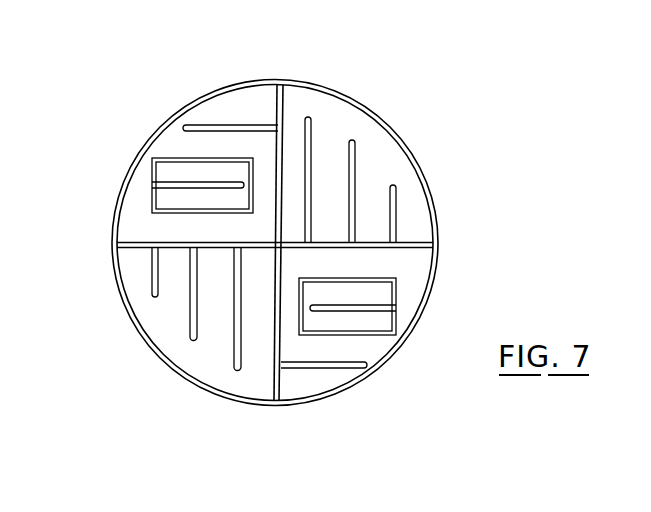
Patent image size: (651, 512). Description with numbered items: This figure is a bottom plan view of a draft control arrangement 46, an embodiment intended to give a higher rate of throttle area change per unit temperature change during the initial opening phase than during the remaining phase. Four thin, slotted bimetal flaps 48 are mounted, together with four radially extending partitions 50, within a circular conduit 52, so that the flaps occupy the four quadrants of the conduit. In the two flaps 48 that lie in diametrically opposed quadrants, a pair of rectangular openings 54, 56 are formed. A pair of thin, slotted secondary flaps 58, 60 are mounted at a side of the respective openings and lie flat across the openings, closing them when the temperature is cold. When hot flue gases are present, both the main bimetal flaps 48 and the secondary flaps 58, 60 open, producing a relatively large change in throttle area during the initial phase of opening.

The draft control arrangement 46 is at (433, 167).
The slotted bimetal flaps 48 is at (282, 226).
The radially extending partitions 50 is at (414, 243).
The circular conduit 52 is at (387, 123).
The rectangular opening 54 is at (377, 332).
The rectangular opening 56 is at (176, 160).
The slotted secondary flap 58 is at (386, 298).
The slotted secondary flap 60 is at (159, 192).